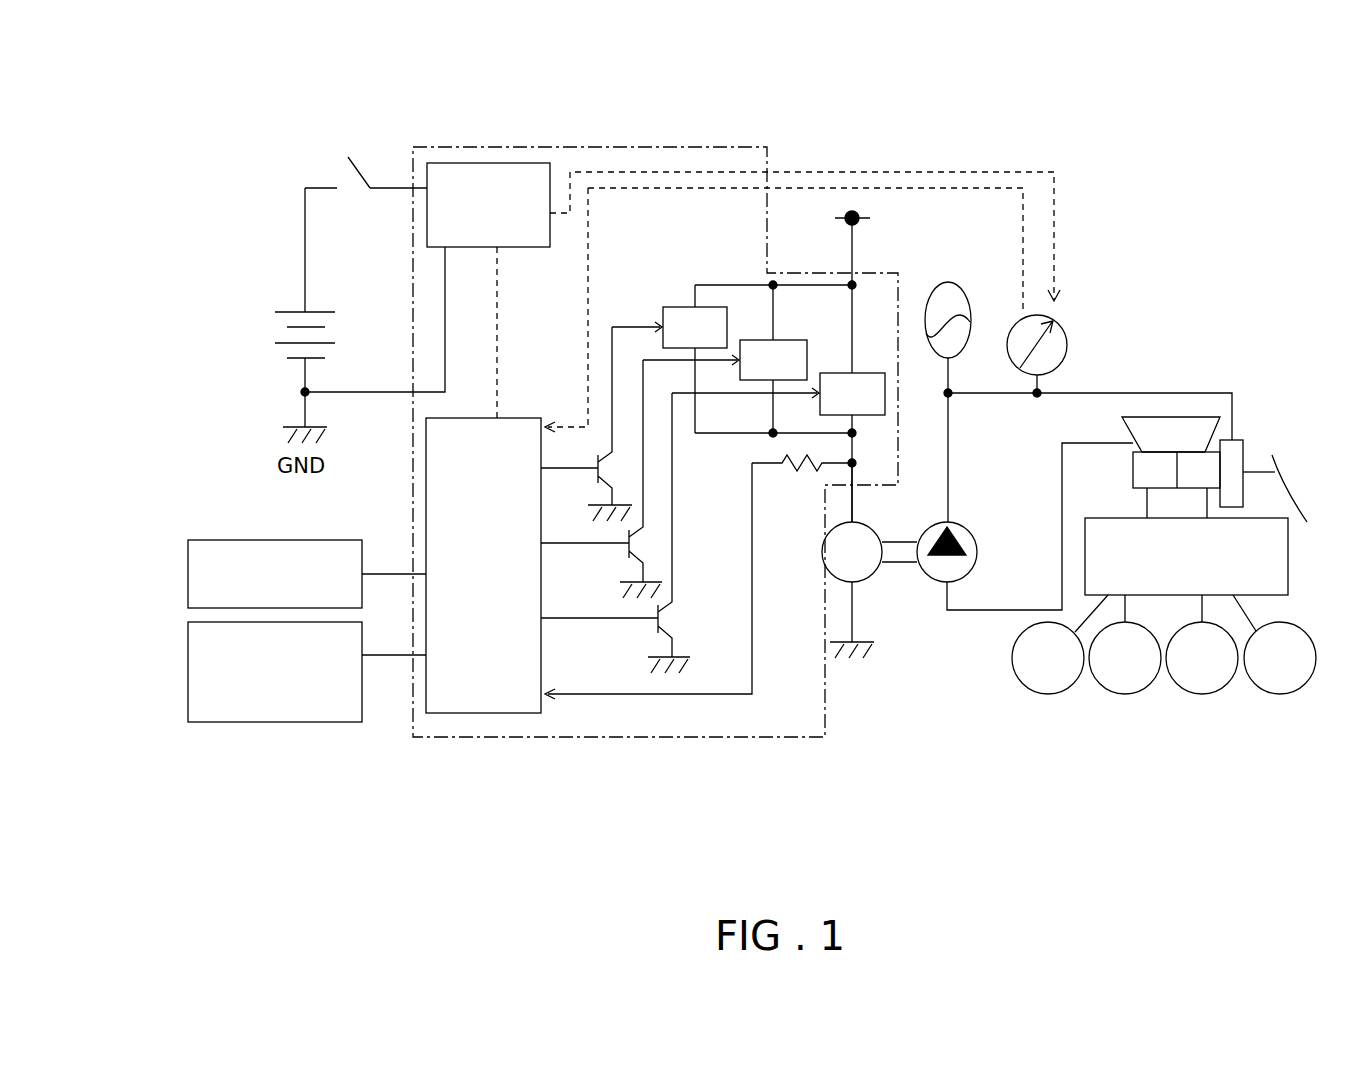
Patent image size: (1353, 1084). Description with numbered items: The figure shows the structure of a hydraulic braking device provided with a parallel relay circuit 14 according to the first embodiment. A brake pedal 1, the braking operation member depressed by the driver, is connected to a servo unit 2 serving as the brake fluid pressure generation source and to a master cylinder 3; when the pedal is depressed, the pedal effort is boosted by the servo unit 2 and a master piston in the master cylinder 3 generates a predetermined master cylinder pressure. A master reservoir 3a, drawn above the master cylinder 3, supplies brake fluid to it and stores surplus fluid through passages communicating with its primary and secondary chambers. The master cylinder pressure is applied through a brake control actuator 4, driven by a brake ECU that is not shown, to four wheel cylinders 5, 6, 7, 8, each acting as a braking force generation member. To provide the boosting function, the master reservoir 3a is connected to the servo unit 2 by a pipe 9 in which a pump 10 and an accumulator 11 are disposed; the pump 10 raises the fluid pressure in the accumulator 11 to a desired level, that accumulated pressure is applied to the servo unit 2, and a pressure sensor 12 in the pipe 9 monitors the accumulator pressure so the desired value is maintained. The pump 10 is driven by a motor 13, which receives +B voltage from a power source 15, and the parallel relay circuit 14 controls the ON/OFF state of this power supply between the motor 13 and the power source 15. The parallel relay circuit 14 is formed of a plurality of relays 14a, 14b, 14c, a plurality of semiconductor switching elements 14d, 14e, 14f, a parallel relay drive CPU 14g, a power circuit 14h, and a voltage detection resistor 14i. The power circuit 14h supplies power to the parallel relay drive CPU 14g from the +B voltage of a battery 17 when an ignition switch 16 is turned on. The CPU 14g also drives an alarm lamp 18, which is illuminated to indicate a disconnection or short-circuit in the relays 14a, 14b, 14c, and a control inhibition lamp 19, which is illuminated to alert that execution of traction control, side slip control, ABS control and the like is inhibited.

The brake pedal 1 is at (1298, 494).
The servo unit 2 is at (1243, 443).
The master cylinder 3 is at (1133, 472).
The master reservoir 3a is at (1120, 425).
The brake control actuator 4 is at (1290, 553).
The wheel cylinder 5 is at (1044, 694).
The wheel cylinder 6 is at (1121, 694).
The wheel cylinder 7 is at (1198, 694).
The wheel cylinder 8 is at (1276, 694).
The pipe 9 is at (1193, 392).
The pump 10 is at (978, 552).
The accumulator 11 is at (963, 290).
The pressure sensor 12 is at (1068, 345).
The motor 13 is at (872, 574).
The parallel relay circuit 14 is at (623, 146).
The relay 14a is at (683, 306).
The relay 14b is at (752, 339).
The relay 14c is at (832, 372).
The semiconductor switching element 14d is at (596, 480).
The semiconductor switching element 14e is at (627, 553).
The semiconductor switching element 14f is at (655, 628).
The parallel relay drive CPU 14g is at (480, 713).
The power circuit 14h is at (500, 163).
The voltage detection resistor 14i is at (798, 476).
The power source 15 is at (870, 218).
The ignition switch 16 is at (360, 172).
The battery 17 is at (292, 311).
The alarm lamp 18 is at (188, 574).
The control inhibition lamp 19 is at (188, 655).